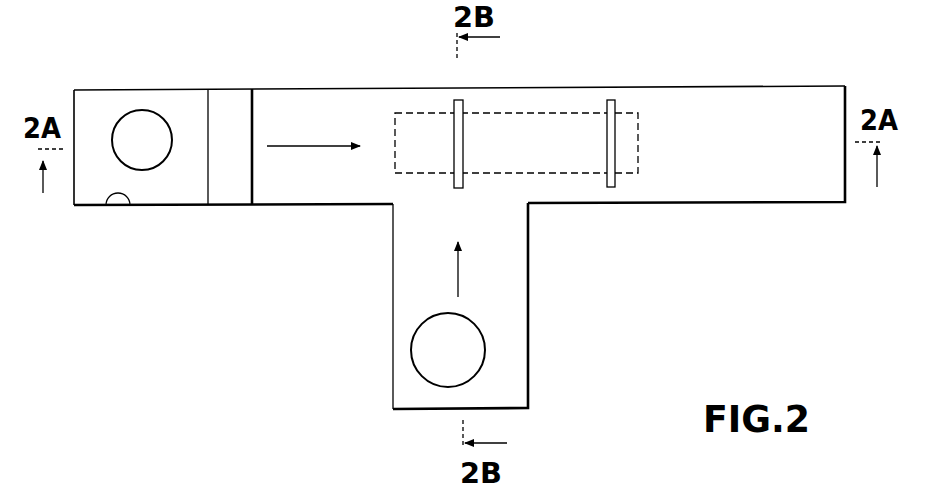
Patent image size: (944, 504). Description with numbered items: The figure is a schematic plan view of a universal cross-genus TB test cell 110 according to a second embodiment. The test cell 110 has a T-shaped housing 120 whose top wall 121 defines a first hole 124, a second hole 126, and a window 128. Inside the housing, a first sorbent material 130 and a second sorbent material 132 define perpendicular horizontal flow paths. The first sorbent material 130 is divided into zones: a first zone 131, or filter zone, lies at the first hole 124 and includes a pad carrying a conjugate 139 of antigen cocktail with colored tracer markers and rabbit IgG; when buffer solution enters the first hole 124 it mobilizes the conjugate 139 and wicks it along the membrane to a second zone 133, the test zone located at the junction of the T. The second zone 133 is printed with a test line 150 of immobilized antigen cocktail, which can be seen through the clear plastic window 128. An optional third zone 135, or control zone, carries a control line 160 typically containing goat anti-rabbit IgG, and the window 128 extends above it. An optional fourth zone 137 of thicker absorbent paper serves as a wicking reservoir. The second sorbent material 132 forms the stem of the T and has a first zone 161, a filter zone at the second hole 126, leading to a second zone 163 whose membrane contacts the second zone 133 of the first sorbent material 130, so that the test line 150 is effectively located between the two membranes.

The test cell 110 is at (352, 275).
The T-shaped housing 120 is at (285, 207).
The top wall 121 is at (128, 208).
The first hole 124 is at (142, 112).
The second hole 126 is at (427, 373).
The window 128 is at (623, 173).
The first sorbent material 130 is at (320, 212).
The first zone 131 is at (200, 192).
The second sorbent material 132 is at (515, 352).
The second zone 133 is at (445, 151).
The third zone 135 is at (585, 151).
The fourth zone 137 is at (808, 139).
The conjugate 139 is at (220, 198).
The test line 150 is at (463, 143).
The control line 160 is at (615, 120).
The first zone 161 is at (448, 306).
The second zone 163 is at (447, 182).